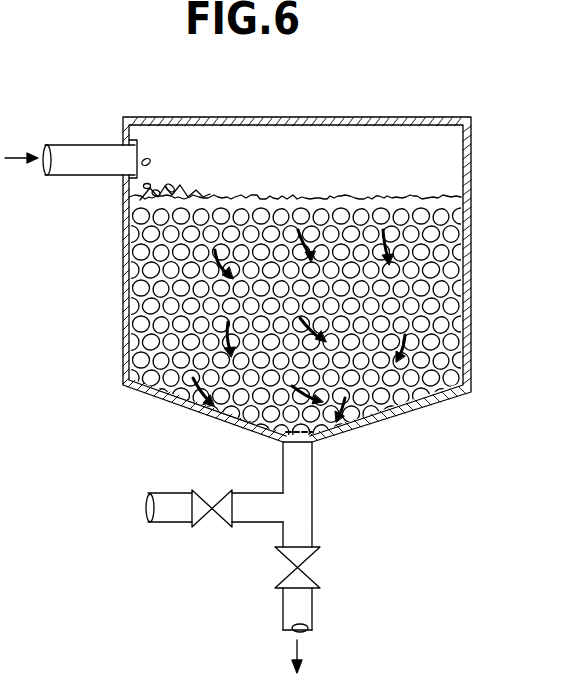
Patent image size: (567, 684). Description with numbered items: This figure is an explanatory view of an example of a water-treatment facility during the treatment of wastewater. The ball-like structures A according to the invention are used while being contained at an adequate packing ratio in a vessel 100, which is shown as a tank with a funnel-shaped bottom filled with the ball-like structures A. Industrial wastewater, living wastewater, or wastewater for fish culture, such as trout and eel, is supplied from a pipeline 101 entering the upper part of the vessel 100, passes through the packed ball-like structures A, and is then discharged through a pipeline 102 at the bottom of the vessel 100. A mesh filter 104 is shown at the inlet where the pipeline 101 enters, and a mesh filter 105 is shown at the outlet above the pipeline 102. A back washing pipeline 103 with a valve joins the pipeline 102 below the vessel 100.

The vessel 100 is at (471, 160).
The pipeline 101 is at (85, 168).
The pipeline 102 is at (312, 476).
The back washing pipeline 103 is at (245, 523).
The mesh filter 104 is at (137, 157).
The mesh filter 105 is at (292, 437).
The ball-like structures A is at (452, 305).